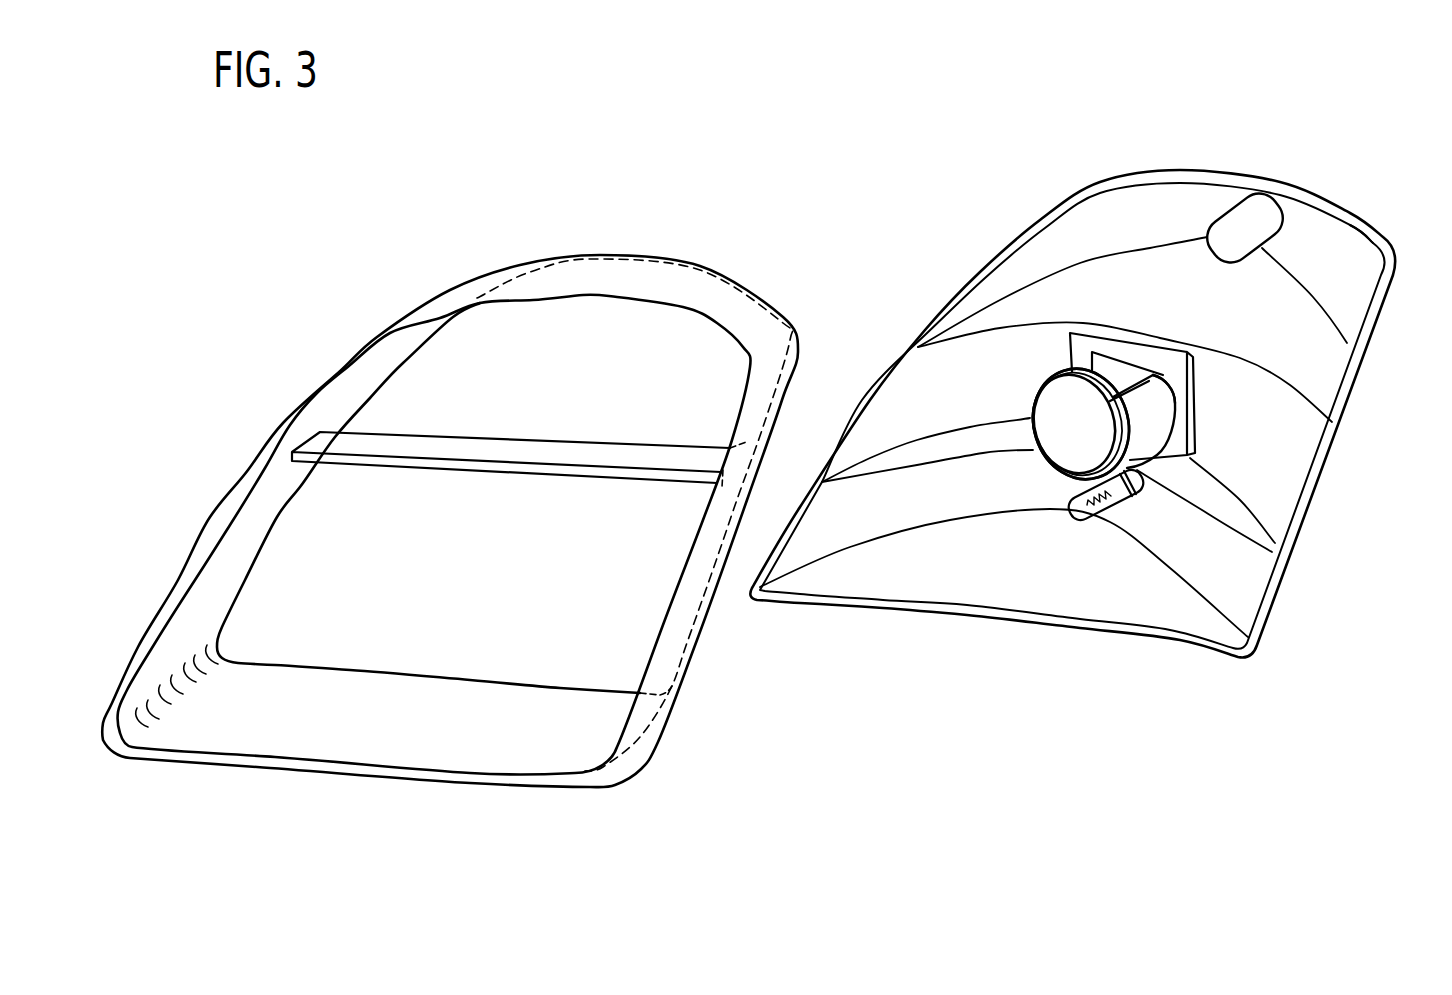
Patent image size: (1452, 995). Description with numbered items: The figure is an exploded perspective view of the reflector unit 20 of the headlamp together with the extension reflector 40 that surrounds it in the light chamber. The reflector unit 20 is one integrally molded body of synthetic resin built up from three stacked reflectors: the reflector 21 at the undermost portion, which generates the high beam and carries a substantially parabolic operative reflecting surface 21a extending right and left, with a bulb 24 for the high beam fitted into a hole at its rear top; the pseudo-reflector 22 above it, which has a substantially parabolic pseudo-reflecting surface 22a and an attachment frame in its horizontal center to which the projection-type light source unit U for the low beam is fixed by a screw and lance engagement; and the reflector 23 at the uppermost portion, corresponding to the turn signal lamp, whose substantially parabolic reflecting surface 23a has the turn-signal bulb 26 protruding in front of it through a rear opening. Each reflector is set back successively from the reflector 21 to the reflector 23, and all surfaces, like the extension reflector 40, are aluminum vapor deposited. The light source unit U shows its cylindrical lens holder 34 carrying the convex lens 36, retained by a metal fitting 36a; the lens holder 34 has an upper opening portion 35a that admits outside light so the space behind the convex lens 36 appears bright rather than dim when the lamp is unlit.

The extension reflector 40 is at (561, 254).
The reflector unit 20 is at (945, 162).
The reflector 21 is at (803, 497).
The pseudo-reflector 22 is at (887, 367).
The reflector 23 is at (980, 272).
The operative reflecting surface 21a is at (1242, 562).
The pseudo-reflecting surface 22a is at (1290, 460).
The reflecting surface 23a is at (1340, 248).
The bulb 24 is at (1083, 523).
The bulb 26 is at (1235, 217).
The lens holder 34 is at (1140, 425).
The upper opening portion 35a is at (1108, 378).
The convex lens 36 is at (1047, 437).
The metal fitting 36a is at (1042, 377).
The projection-type light source unit U is at (1050, 482).